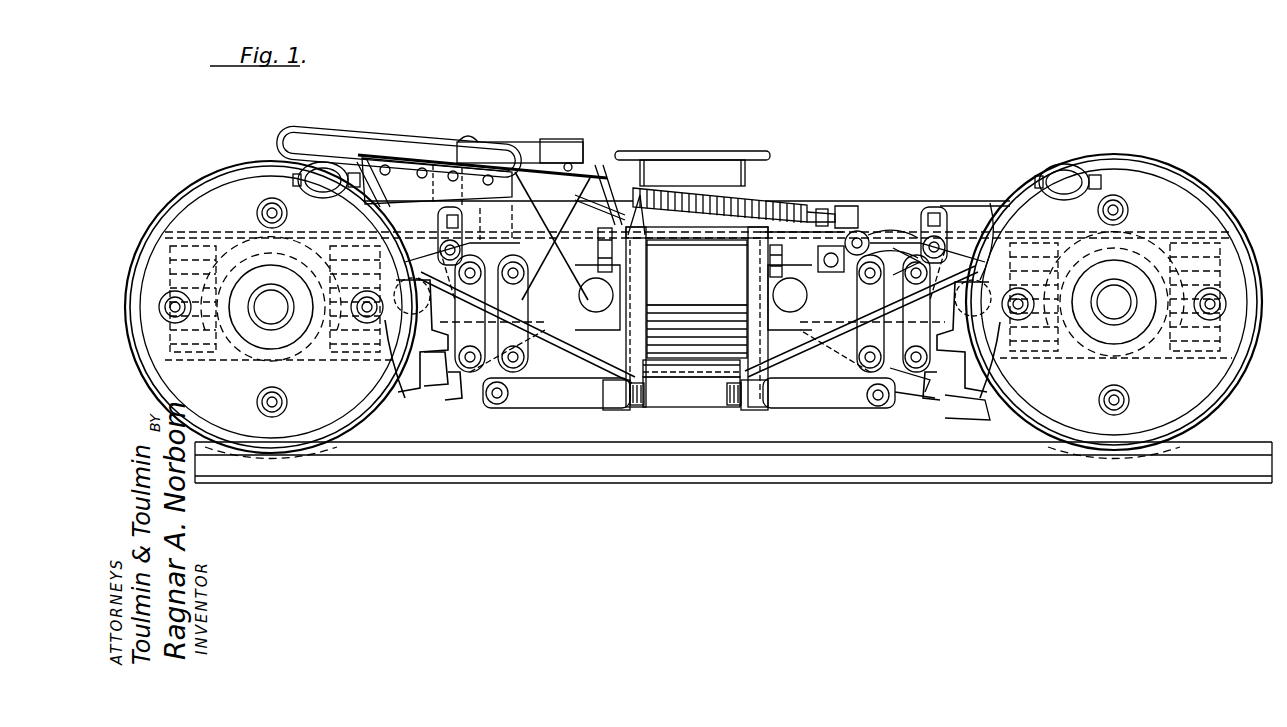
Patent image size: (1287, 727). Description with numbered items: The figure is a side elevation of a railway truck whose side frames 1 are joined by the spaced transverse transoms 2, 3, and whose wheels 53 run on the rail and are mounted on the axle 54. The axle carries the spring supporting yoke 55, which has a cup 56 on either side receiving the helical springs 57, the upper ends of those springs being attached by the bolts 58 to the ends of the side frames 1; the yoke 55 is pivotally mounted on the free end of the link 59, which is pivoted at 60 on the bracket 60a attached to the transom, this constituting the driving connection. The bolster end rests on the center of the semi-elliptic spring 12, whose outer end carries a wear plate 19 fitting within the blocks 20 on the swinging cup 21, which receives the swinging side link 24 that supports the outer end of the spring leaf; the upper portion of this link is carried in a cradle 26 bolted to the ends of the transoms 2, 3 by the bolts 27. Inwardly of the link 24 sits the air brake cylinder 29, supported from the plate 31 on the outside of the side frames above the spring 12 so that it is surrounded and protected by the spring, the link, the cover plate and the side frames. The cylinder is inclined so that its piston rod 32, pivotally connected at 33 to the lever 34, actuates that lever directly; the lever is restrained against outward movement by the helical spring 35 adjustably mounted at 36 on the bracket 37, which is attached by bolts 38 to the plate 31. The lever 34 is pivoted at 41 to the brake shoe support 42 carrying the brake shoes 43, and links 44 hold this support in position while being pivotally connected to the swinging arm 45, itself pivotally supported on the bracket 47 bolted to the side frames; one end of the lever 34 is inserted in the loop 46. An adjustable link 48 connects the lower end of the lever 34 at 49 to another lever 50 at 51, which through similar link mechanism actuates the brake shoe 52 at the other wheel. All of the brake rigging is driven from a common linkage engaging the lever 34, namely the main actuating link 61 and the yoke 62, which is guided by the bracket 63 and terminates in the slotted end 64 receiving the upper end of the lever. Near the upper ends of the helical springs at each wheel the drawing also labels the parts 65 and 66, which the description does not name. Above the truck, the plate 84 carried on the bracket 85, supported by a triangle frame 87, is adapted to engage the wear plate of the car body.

The side frames 1 is at (965, 199).
The transom 2 is at (818, 246).
The transom 3 is at (618, 232).
The semi-elliptic spring 12 is at (683, 348).
The wear plate 19 is at (686, 348).
The blocks 20 is at (652, 382).
The swinging cup 21 is at (653, 385).
The swinging side link 24 is at (717, 345).
The cradle 26 is at (698, 252).
The bolts 27 is at (878, 245).
The air brake cylinder 29 is at (720, 300).
The plate 31 is at (636, 195).
The piston rod 32 is at (585, 238).
The pivotal connection 33 is at (582, 250).
The lever 34 is at (602, 165).
The helical spring 35 is at (782, 200).
The adjustable mounting 36 is at (852, 206).
The bracket 37 is at (845, 232).
The bolts 38 is at (845, 238).
The pivot 41 is at (490, 395).
The brake shoe support 42 is at (440, 386).
The brake shoes 43 is at (415, 388).
The links 44 is at (476, 375).
The swinging arm 45 is at (960, 250).
The loop 46 is at (576, 340).
The bracket 47 is at (450, 207).
The adjustable link 48 is at (853, 405).
The connection point 49 is at (500, 405).
The lever 50 is at (902, 400).
The connection point 51 is at (868, 402).
The brake shoe 52 is at (985, 420).
The wheels 53 is at (296, 430).
The axle 54 is at (268, 298).
The spring supporting yoke 55 is at (250, 352).
The cup 56 is at (205, 357).
The helical springs 57 is at (128, 300).
The bolts 58 is at (192, 248).
The link 59 is at (594, 313).
The pivot 60 is at (600, 375).
The bracket 60a is at (620, 412).
The main actuating link 61 is at (470, 160).
The yoke 62 is at (568, 139).
The bracket 63 is at (396, 138).
The slotted end 64 is at (522, 140).
The spring cap 65 is at (352, 172).
The spring seat ring 66 is at (320, 162).
The plate 84 is at (682, 163).
The bracket 85 is at (660, 153).
The triangle frame 87 is at (686, 150).